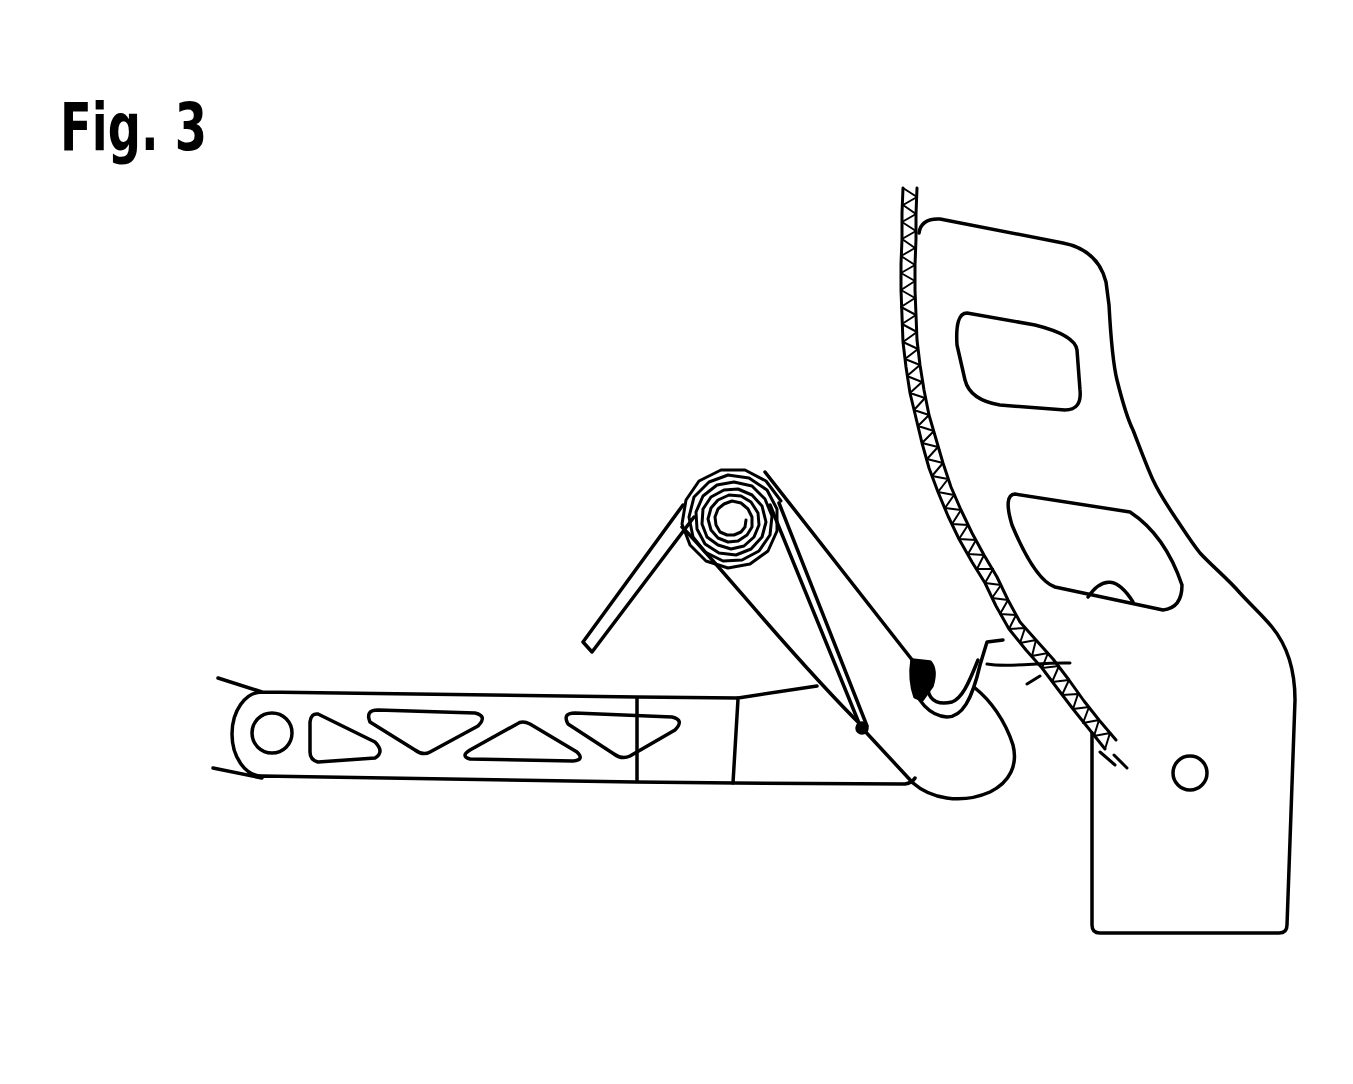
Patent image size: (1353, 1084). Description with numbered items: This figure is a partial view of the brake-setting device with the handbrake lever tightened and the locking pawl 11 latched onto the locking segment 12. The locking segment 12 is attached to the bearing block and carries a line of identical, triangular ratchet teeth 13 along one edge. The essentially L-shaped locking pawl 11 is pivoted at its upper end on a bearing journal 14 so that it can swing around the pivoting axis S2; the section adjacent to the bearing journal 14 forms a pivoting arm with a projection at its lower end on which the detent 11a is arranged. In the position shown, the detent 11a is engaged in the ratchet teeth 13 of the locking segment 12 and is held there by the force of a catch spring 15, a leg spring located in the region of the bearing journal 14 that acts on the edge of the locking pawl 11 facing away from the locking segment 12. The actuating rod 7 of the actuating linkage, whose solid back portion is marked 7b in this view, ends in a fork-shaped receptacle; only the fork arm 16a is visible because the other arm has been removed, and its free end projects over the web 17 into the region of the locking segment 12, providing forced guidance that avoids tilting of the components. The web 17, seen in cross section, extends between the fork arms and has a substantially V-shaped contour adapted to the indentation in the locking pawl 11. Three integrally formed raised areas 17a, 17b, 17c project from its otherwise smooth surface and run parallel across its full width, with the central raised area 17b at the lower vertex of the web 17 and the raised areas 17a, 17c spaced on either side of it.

The actuating rod 7 is at (328, 818).
The lever arm section 7b is at (448, 758).
The locking pawl 11 is at (841, 519).
The detent 11a is at (1070, 663).
The locking segment 12 is at (1150, 385).
The ratchet teeth 13 is at (905, 241).
The bearing journal 14 is at (733, 517).
The catch spring 15 is at (632, 574).
The fork arm 16a is at (760, 755).
The web 17 is at (947, 688).
The raised area 17a is at (913, 703).
The raised area 17b is at (943, 718).
The raised area 17c is at (1013, 745).
The pivoting axis S2 is at (683, 503).